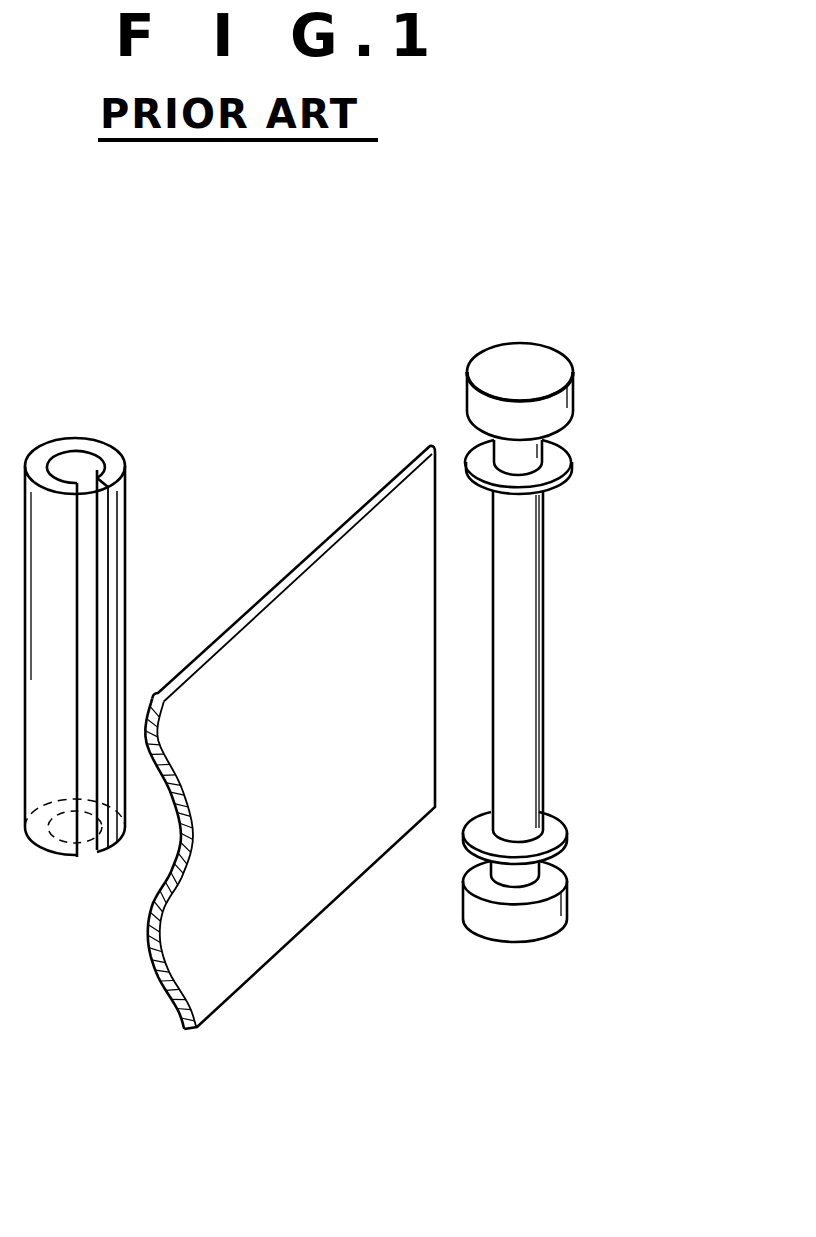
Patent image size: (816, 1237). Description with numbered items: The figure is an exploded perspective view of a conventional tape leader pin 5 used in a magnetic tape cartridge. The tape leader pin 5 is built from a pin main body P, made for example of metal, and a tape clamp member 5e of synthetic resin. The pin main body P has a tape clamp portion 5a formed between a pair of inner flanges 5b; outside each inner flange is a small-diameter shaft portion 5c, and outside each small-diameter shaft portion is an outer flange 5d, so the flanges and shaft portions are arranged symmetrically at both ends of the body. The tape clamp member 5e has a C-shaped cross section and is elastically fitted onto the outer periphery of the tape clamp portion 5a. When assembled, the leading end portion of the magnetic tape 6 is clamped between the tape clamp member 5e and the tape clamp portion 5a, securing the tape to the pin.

The tape leader pin 5 is at (402, 1109).
The tape clamp portion 5a is at (530, 656).
The inner flanges 5b is at (555, 477).
The small-diameter shaft portions 5c is at (540, 457).
The outer flanges 5d is at (477, 410).
The tape clamp member 5e is at (152, 465).
The magnetic tape 6 is at (265, 943).
The pin main body P is at (605, 570).